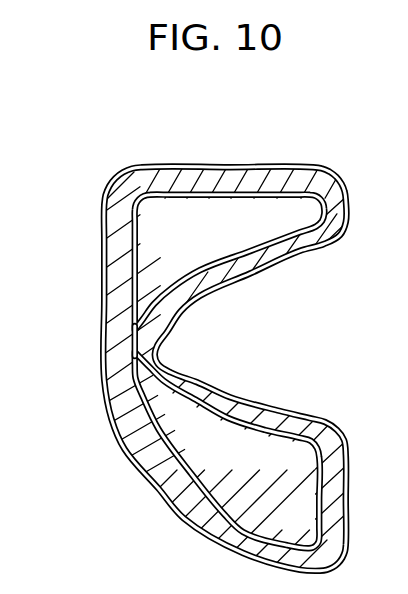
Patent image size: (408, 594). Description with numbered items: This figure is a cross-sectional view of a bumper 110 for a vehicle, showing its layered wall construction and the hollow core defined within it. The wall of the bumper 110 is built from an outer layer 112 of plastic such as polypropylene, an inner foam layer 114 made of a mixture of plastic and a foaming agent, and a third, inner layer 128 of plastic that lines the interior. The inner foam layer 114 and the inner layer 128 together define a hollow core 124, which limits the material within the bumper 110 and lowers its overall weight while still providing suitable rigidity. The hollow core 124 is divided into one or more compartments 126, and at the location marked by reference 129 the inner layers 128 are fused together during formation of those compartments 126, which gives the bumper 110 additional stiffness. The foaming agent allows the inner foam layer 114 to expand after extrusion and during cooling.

The bumper 110 is at (138, 507).
The outer layer 112 is at (100, 280).
The inner foam layer 114 is at (123, 207).
The hollow core 124 is at (167, 427).
The compartments 126 is at (173, 190).
The inner layer 128 is at (208, 193).
The fused inner layers 129 is at (132, 342).